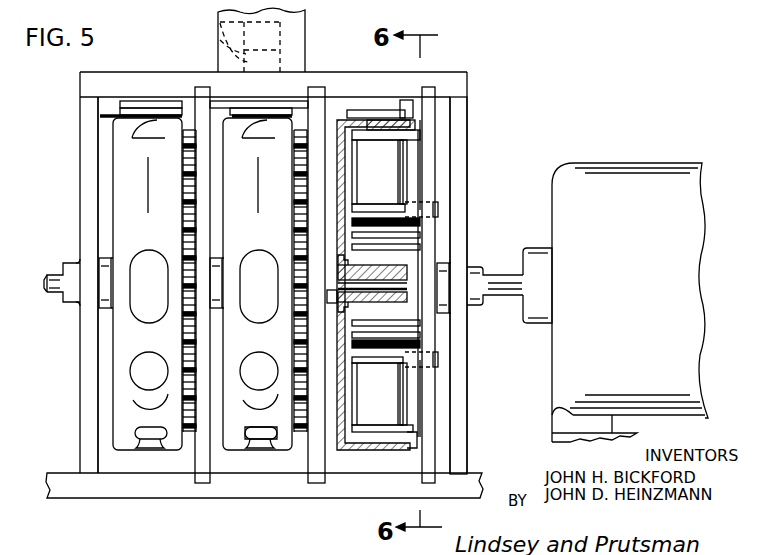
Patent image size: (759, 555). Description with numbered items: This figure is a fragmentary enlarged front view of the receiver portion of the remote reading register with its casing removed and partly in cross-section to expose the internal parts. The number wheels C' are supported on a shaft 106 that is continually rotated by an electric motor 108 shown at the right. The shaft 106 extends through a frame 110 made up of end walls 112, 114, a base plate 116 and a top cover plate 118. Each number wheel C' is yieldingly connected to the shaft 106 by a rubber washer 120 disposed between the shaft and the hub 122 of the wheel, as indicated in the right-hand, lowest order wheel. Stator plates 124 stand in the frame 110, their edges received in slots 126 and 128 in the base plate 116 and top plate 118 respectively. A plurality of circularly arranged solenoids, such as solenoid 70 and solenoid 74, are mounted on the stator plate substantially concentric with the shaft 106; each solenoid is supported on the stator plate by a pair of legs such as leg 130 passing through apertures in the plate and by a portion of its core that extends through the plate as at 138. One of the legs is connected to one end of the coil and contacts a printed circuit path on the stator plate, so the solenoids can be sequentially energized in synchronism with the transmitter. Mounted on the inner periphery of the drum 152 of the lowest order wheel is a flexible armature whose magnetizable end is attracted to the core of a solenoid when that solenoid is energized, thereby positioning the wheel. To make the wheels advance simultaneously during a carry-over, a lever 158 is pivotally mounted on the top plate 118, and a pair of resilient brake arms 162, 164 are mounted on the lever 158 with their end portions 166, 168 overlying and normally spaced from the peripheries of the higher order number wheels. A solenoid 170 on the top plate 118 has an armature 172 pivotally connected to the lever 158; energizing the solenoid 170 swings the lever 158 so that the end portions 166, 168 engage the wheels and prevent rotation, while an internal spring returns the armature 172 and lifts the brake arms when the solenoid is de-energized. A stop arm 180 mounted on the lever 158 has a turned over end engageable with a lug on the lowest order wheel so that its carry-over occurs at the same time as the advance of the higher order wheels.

The solenoid 70 is at (385, 177).
The solenoid 74 is at (395, 393).
The shaft 106 is at (501, 277).
The electric motor 108 is at (627, 171).
The frame 110 is at (80, 164).
The end wall 112 is at (88, 228).
The end wall 114 is at (462, 108).
The base plate 116 is at (160, 490).
The top cover plate 118 is at (93, 80).
The rubber washer 120 is at (340, 273).
The hub 122 is at (405, 298).
The stator plate 124 is at (316, 460).
The slot 126 is at (450, 482).
The slot 128 is at (432, 88).
The supporting leg 130 is at (420, 140).
The core portion 138 is at (437, 208).
The drum 152 is at (436, 452).
The lever 158 is at (219, 48).
The brake arm 162 is at (127, 110).
The brake arm 164 is at (240, 110).
The end portion 166 is at (115, 122).
The end portion 168 is at (257, 283).
The solenoid 170 is at (300, 31).
The armature 172 is at (219, 22).
The stop arm 180 is at (360, 113).
The number wheel C' is at (246, 482).